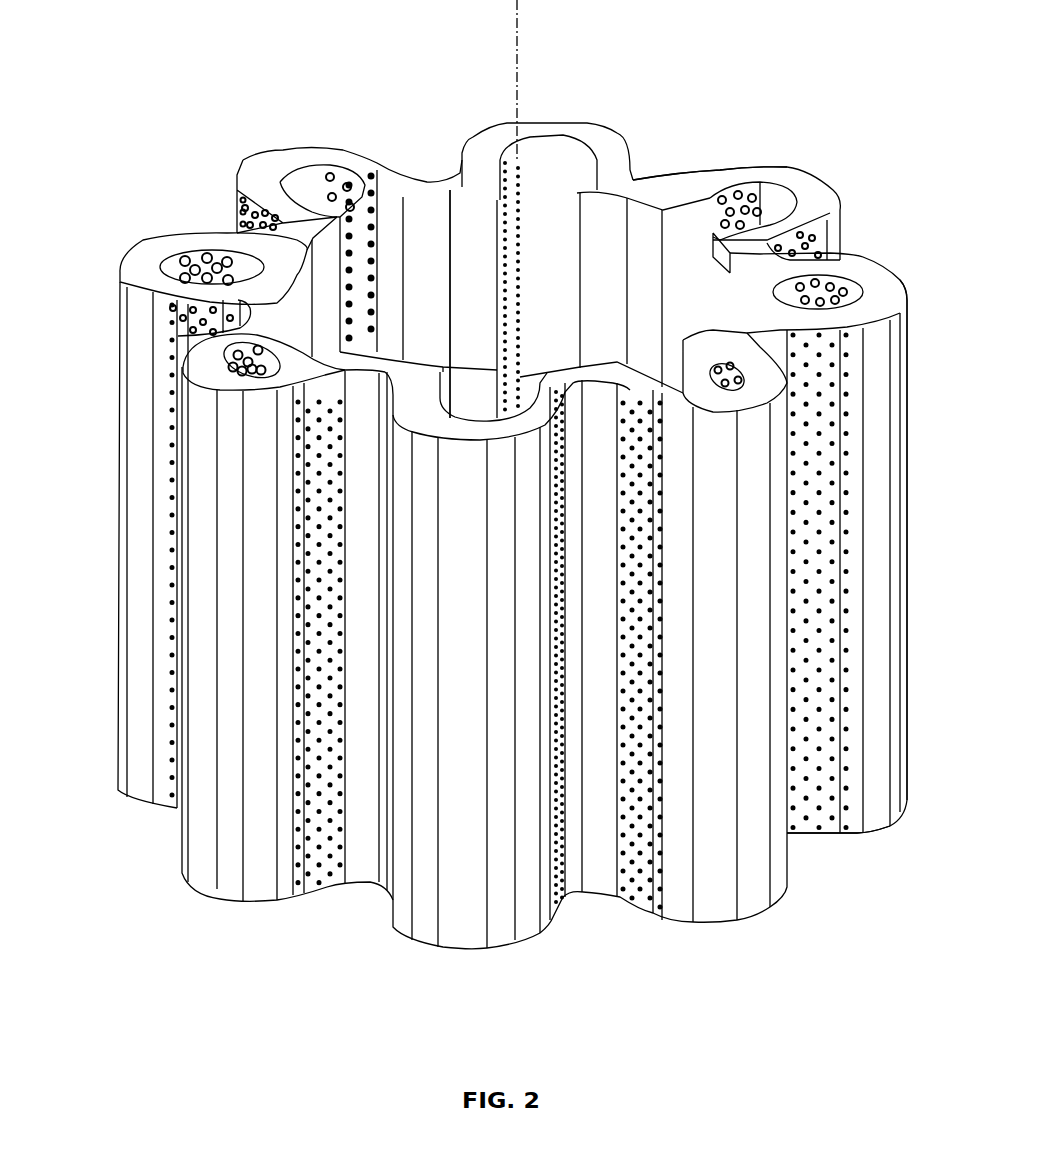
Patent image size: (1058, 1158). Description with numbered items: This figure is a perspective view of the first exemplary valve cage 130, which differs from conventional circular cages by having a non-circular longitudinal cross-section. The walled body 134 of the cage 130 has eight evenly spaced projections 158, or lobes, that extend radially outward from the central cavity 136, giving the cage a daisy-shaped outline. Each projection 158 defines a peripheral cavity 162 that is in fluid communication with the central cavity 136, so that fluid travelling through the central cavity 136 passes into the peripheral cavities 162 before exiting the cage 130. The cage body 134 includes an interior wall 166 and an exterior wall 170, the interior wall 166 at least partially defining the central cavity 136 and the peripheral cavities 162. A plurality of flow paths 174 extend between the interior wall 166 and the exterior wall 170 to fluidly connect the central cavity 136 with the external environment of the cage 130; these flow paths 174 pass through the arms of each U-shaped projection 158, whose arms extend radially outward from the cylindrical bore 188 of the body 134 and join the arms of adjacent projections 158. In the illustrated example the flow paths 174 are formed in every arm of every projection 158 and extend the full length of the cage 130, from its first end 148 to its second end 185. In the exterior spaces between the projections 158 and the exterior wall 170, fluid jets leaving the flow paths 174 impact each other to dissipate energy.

The cage 130 is at (502, 498).
The walled body 134 is at (713, 183).
The central cavity 136 is at (463, 225).
The first end 148 is at (900, 280).
The projection 158 is at (262, 170).
The peripheral cavity 162 is at (315, 185).
The interior wall 166 is at (643, 223).
The exterior wall 170 is at (895, 600).
The flow paths 174 is at (360, 182).
The second end 185 is at (817, 840).
The cylindrical bore 188 is at (603, 200).